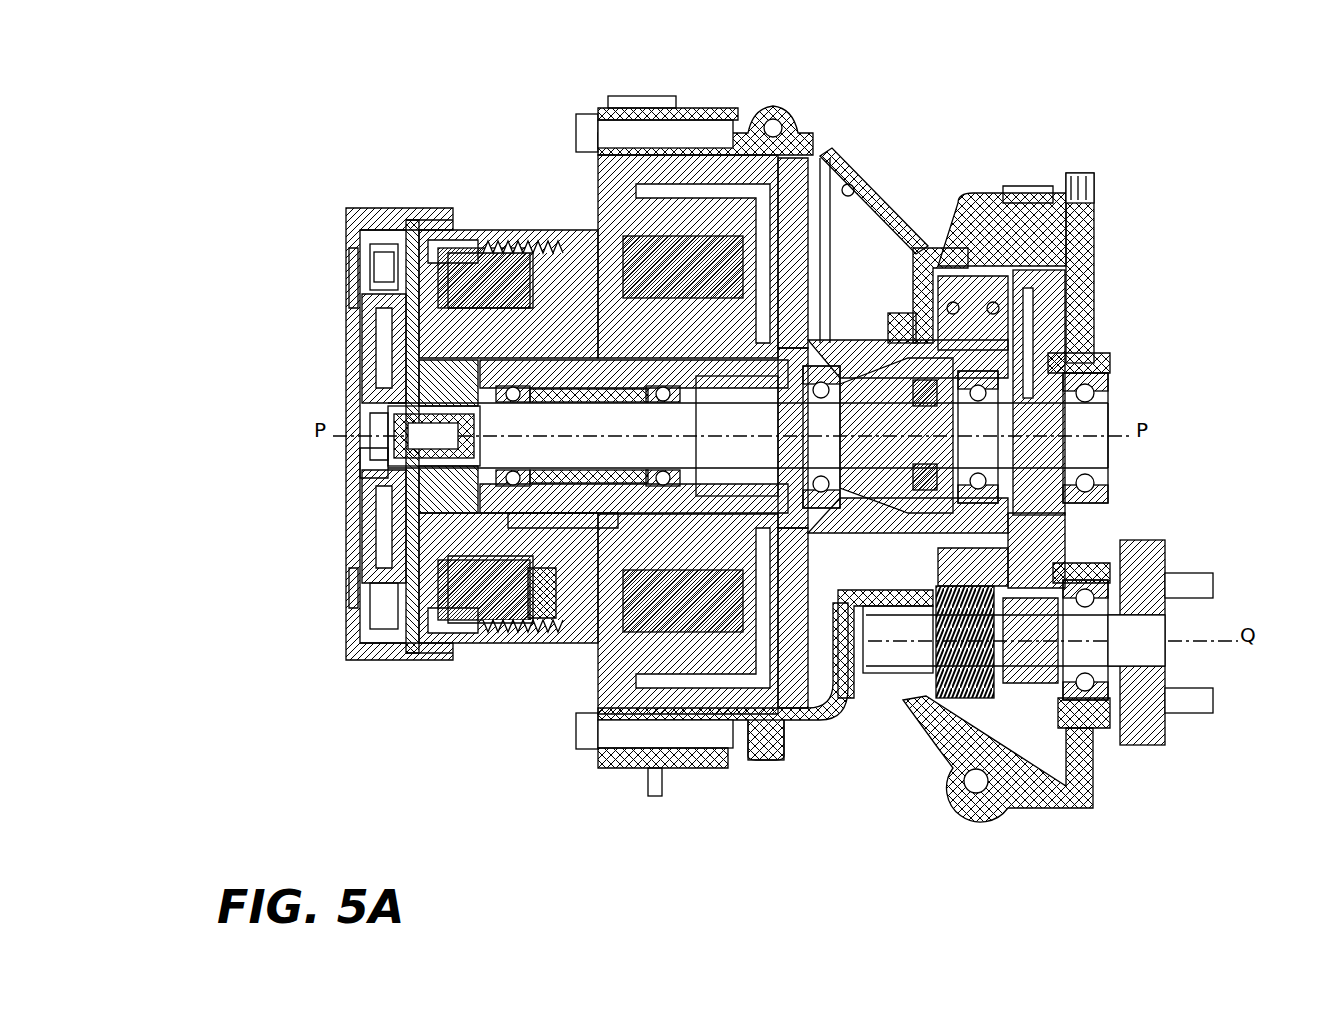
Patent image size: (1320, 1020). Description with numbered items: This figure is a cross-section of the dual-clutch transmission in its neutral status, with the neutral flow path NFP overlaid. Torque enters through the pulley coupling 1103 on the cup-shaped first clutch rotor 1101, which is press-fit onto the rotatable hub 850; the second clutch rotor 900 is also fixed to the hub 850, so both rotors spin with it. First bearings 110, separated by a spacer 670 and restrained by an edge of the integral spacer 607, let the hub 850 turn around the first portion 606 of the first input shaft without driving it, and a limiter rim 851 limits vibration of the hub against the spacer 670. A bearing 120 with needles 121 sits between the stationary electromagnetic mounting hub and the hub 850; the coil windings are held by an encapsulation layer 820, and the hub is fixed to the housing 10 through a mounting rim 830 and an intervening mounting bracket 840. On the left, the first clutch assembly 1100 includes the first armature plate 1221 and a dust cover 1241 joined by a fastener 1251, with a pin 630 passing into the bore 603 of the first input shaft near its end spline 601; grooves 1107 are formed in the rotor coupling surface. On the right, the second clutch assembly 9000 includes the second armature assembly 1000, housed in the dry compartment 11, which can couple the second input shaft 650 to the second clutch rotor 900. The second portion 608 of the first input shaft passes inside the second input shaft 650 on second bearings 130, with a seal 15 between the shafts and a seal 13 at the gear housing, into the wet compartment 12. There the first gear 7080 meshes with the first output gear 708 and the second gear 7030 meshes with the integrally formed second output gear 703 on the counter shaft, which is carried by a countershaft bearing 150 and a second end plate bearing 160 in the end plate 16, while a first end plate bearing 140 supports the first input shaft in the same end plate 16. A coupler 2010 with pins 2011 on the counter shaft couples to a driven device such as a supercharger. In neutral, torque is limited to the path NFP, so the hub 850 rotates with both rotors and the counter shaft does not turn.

The housing 10 is at (690, 100).
The dry compartment 11 is at (860, 185).
The wet compartment 12 is at (940, 700).
The seal 13 is at (896, 310).
The seal 15 is at (914, 398).
The end plate 16 is at (1080, 228).
The first bearings 110 is at (490, 400).
The bearing 120 is at (556, 522).
The needles 121 is at (512, 590).
The second bearings 130 is at (812, 402).
The first end plate bearing 140 is at (1100, 395).
The countershaft bearing 150 is at (850, 700).
The second end plate bearing 160 is at (1092, 695).
The end spline 601 is at (425, 398).
The bore 603 is at (350, 445).
The first portion 606 is at (645, 400).
The integral spacer 607 is at (700, 378).
The second portion 608 is at (846, 398).
The pin 630 is at (370, 418).
The second input shaft 650 is at (836, 332).
The spacer 670 is at (556, 402).
The second output gear 703 is at (985, 700).
The first output gear 708 is at (1040, 522).
The encapsulation layer 820 is at (466, 600).
The mounting rim 830 is at (595, 105).
The mounting bracket 840 is at (636, 88).
The rotatable hub 850 is at (748, 365).
The limiter rim 851 is at (612, 398).
The second clutch rotor 900 is at (762, 180).
The second armature assembly 1000 is at (808, 165).
The first clutch assembly 1100 is at (372, 672).
The first clutch rotor 1101 is at (405, 218).
The pulley coupling 1103 is at (486, 232).
The grooves 1107 is at (418, 225).
The first armature plate 1221 is at (388, 238).
The dust cover 1241 is at (350, 565).
The fastener 1251 is at (350, 255).
The coupler 2010 is at (1150, 535).
The pins 2011 is at (1195, 568).
The second gear 7030 is at (958, 278).
The first gear 7080 is at (1050, 310).
The second clutch assembly 9000 is at (780, 762).
The neutral flow path NFP is at (522, 240).